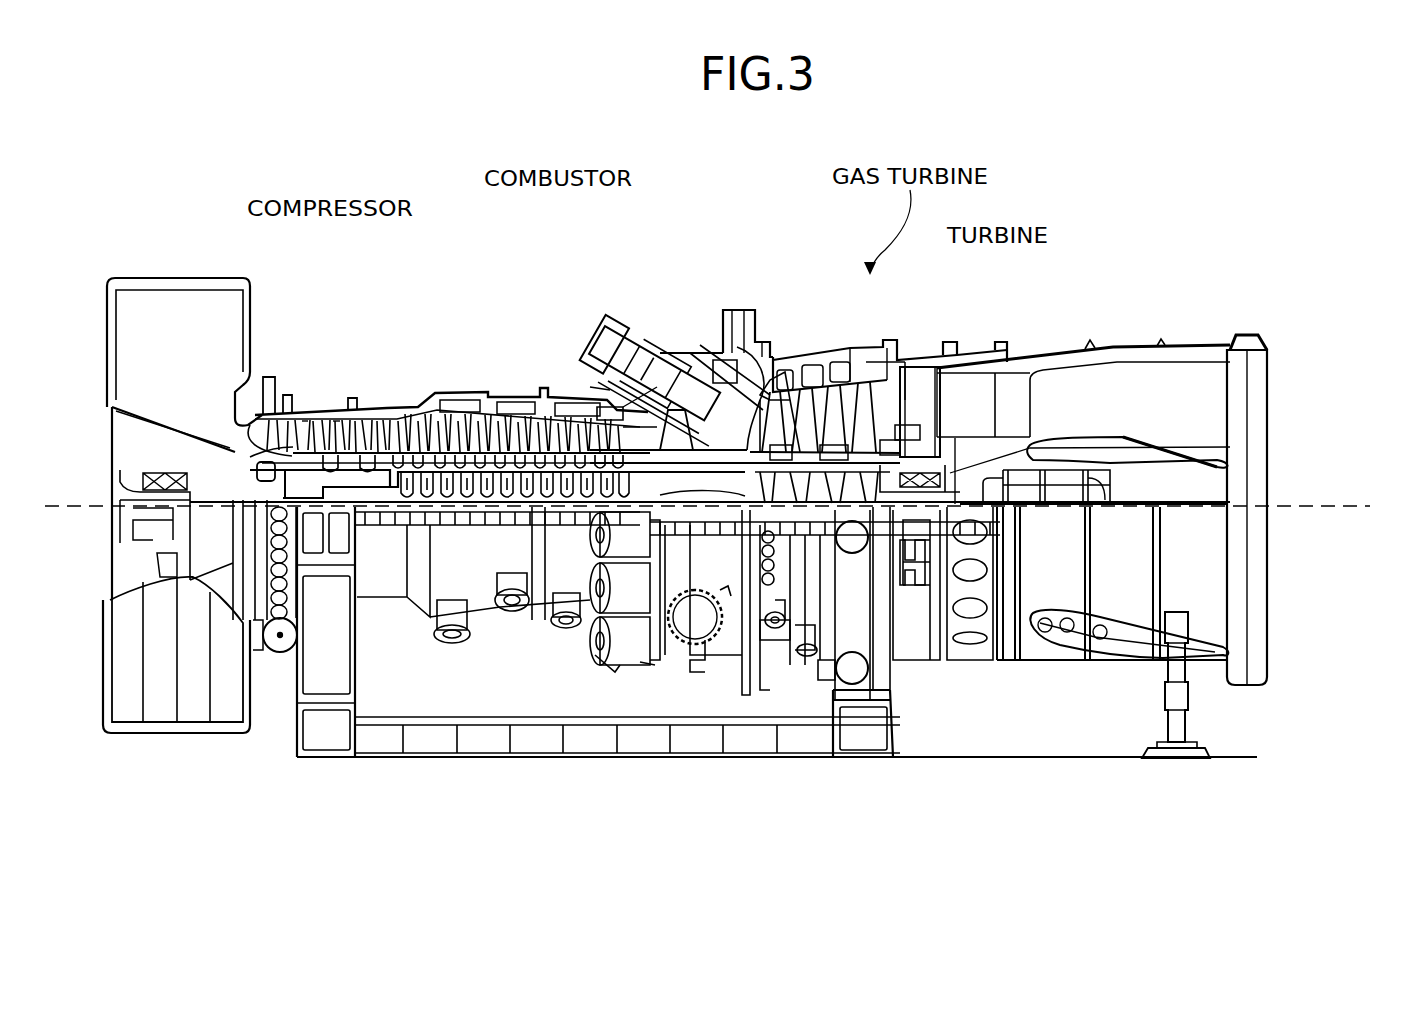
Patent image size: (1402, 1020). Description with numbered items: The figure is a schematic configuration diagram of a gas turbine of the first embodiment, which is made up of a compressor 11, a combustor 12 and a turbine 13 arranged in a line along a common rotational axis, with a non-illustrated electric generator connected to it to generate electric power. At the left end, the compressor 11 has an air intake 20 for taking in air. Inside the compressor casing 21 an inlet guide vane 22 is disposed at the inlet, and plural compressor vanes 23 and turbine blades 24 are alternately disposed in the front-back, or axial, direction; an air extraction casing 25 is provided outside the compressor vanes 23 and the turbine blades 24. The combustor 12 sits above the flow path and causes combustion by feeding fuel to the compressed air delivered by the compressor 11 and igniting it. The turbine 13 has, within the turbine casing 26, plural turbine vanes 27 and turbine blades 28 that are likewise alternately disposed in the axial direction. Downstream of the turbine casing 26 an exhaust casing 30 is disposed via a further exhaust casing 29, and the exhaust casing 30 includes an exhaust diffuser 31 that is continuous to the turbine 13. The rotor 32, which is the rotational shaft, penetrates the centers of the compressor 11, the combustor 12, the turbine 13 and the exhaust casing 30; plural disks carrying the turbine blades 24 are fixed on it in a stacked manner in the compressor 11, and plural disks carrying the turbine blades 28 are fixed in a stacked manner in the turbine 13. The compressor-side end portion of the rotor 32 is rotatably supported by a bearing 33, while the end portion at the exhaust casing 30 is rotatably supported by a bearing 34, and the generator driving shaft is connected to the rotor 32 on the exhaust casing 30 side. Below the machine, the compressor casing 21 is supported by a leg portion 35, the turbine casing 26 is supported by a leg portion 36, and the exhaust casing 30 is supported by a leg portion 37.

The compressor 11 is at (330, 350).
The combustor 12 is at (620, 318).
The turbine 13 is at (893, 332).
The air intake 20 is at (120, 342).
The compressor casing 21 is at (320, 428).
The inlet guide vane 22 is at (275, 427).
The compressor vanes 23 is at (332, 427).
The turbine blades 24 is at (290, 427).
The air extraction casing 25 is at (457, 403).
The turbine casing 26 is at (824, 362).
The turbine vanes 27 is at (778, 367).
The turbine blades 28 is at (737, 352).
The exhaust casing 29 is at (922, 354).
The exhaust casing 30 is at (1185, 345).
The exhaust diffuser 31 is at (970, 365).
The rotor 32 is at (620, 412).
The bearing 33 is at (120, 483).
The bearing 34 is at (1230, 448).
The leg portion 35 is at (300, 683).
The leg portion 36 is at (882, 673).
The leg portion 37 is at (1188, 700).